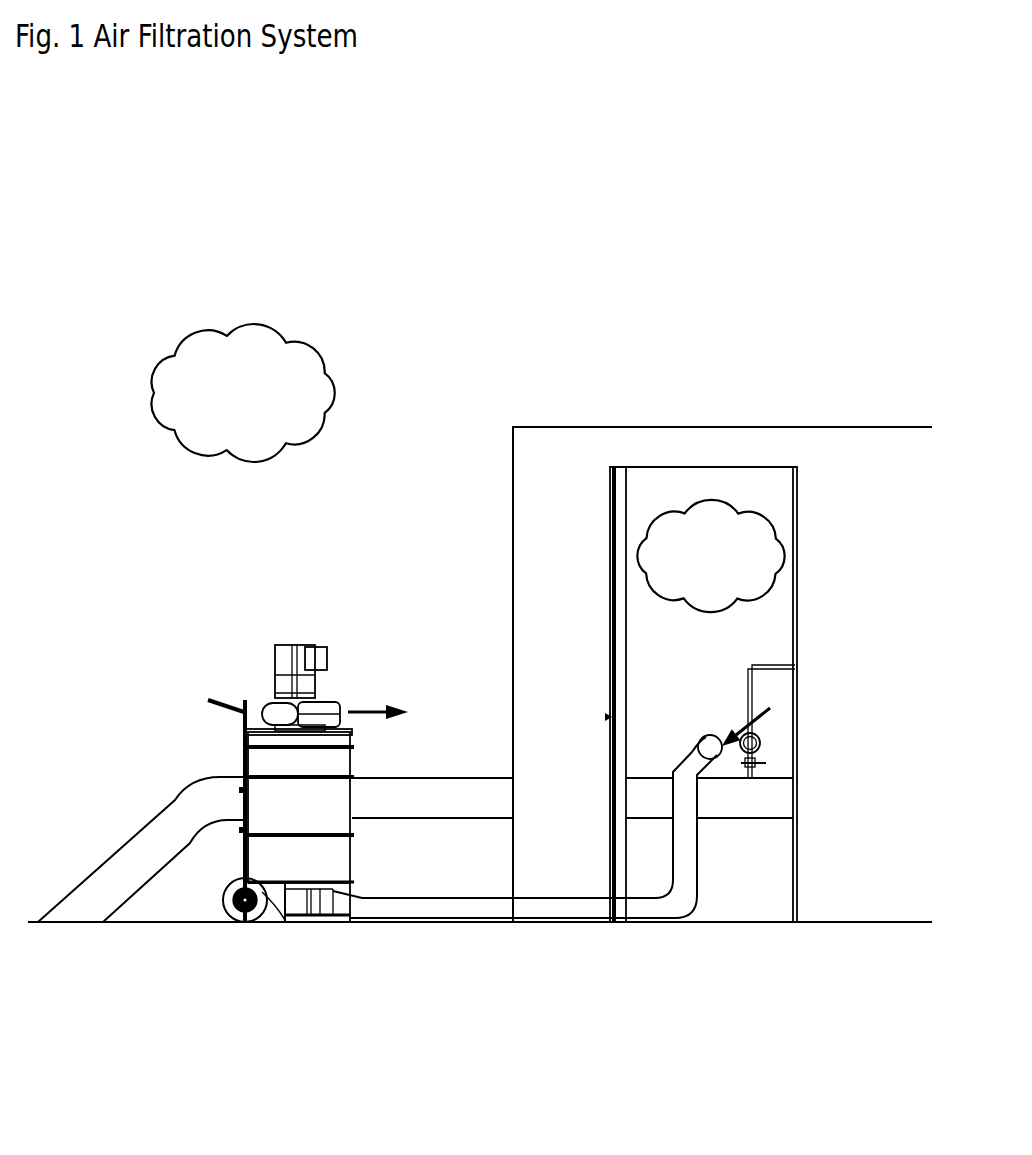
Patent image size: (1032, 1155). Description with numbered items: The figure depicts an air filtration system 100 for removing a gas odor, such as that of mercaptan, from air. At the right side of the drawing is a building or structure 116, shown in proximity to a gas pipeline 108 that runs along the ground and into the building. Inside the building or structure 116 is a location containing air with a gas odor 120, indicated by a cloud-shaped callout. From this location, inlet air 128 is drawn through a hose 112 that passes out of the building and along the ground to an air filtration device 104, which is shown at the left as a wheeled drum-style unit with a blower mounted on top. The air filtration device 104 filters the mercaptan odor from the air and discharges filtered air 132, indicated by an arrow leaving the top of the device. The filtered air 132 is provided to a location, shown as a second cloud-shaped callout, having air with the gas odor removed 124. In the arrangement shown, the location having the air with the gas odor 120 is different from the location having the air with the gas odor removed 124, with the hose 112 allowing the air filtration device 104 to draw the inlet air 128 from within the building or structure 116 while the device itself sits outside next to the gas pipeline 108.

The air filtration system 100 is at (871, 99).
The air filtration device 104 is at (240, 648).
The gas pipeline 108 is at (104, 887).
The hose 112 is at (552, 905).
The building or structure 116 is at (737, 453).
The air with a gas odor 120 is at (726, 590).
The air with gas odor removed 124 is at (258, 430).
The inlet air 128 is at (765, 717).
The filtered air 132 is at (370, 706).